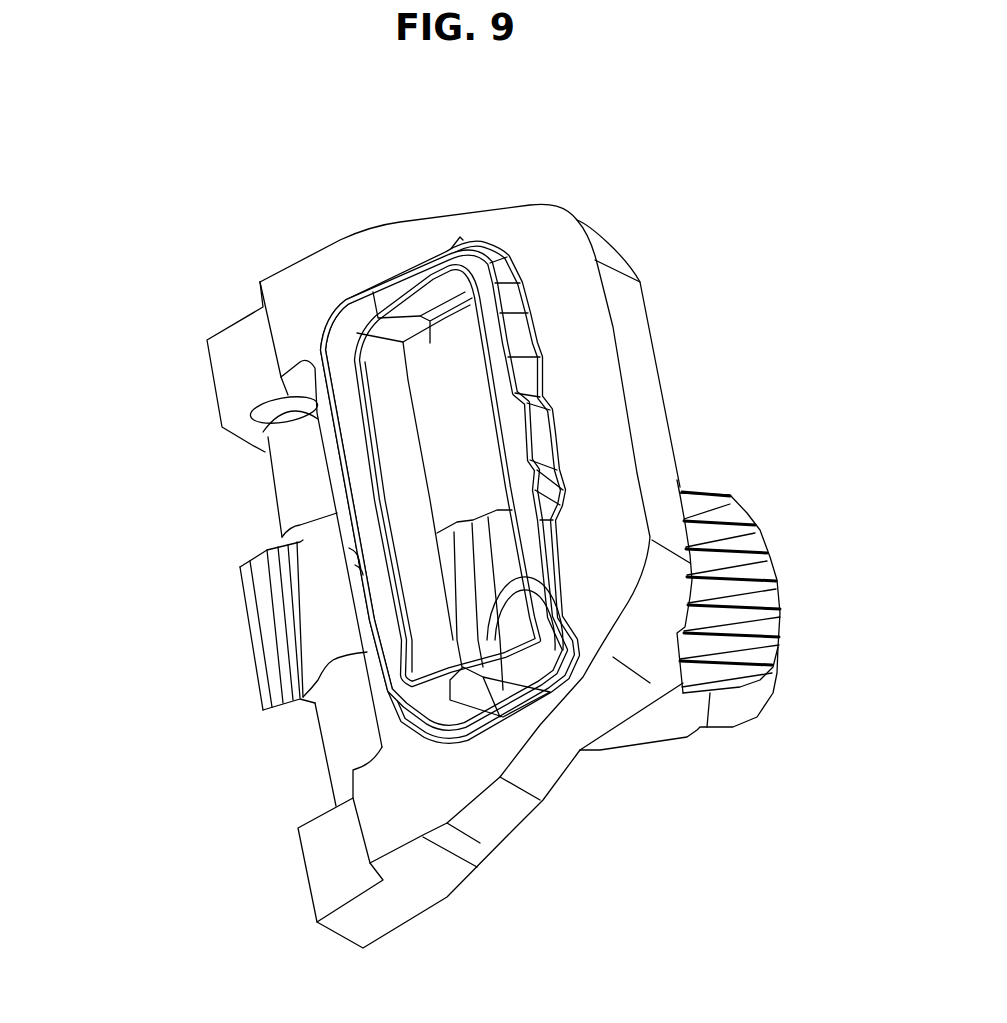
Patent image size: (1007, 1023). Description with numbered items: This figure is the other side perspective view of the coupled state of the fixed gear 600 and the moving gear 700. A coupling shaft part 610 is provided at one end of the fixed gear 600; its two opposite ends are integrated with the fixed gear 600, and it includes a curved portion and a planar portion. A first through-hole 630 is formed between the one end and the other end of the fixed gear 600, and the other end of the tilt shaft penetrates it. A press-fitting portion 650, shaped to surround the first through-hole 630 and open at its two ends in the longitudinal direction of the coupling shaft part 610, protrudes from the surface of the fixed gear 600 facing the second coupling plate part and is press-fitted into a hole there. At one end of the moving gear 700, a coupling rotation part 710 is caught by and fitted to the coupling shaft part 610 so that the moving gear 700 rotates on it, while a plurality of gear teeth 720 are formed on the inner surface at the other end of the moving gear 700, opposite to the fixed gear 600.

The fixed gear 600 is at (535, 222).
The coupling shaft part 610 is at (283, 478).
The first through-hole 630 is at (473, 417).
The press-fitting portion 650 is at (553, 439).
The moving gear 700 is at (660, 727).
The coupling rotation part 710 is at (302, 613).
The gear teeth 720 is at (743, 610).